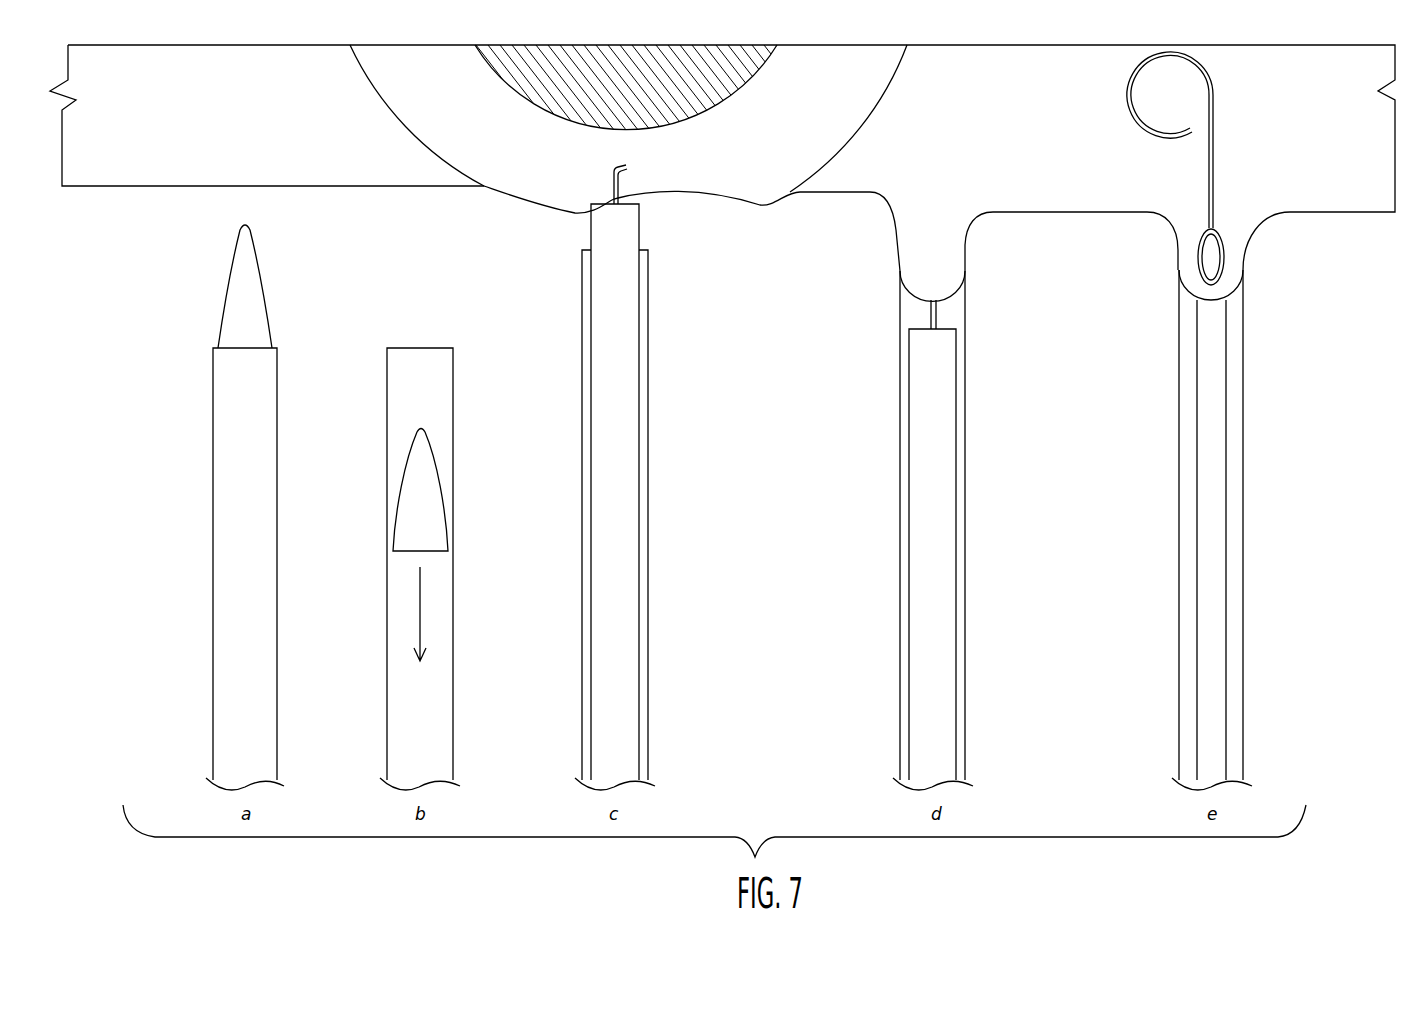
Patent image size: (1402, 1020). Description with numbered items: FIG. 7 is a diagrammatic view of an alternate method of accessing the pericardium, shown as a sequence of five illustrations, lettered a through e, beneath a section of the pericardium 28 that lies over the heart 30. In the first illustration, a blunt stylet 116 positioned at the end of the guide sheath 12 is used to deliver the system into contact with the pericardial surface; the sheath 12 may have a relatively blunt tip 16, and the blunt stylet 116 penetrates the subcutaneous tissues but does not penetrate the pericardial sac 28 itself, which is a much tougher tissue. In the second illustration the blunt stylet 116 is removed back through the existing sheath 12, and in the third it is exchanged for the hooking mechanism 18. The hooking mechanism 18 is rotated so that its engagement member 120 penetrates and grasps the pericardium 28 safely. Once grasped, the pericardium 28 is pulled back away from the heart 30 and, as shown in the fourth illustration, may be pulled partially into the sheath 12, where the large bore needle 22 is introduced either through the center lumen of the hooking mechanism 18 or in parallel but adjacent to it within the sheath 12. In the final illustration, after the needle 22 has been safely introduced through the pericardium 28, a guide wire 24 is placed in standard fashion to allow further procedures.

The guide sheath 12 is at (258, 456).
The blunt tip 16 is at (250, 273).
The hooking mechanism 18 is at (640, 224).
The large bore needle 22 is at (1224, 253).
The guide wire 24 is at (1213, 110).
The pericardium 28 is at (143, 186).
The heart 30 is at (505, 86).
The blunt stylet 116 is at (428, 487).
The engagement member 120 is at (628, 167).